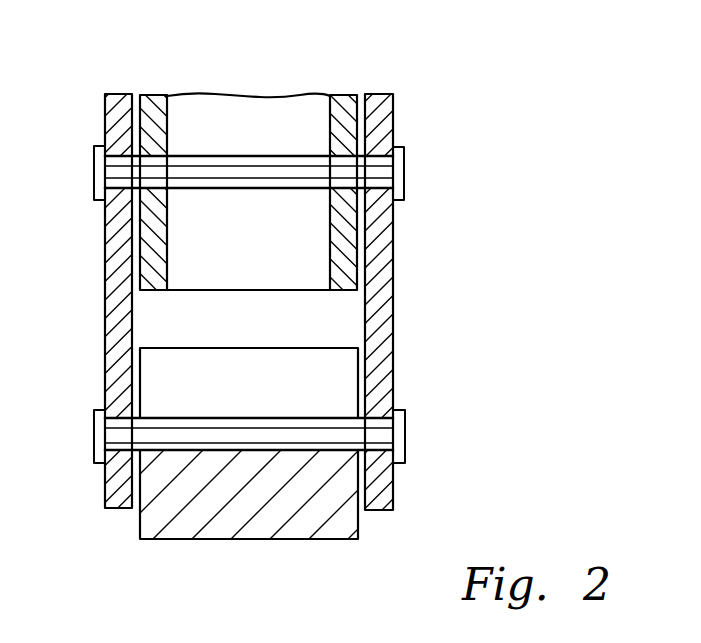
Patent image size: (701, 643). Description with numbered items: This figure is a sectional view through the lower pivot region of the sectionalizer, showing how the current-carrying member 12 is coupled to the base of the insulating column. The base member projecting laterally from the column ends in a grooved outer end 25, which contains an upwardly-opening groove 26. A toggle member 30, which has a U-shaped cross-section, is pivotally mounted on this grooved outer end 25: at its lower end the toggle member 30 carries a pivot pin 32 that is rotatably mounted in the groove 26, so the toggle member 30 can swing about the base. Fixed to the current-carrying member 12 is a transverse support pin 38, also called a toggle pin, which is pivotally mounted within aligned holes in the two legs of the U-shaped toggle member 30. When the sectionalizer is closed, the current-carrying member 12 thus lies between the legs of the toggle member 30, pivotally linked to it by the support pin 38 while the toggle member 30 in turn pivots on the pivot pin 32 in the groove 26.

The current-carrying member 12 is at (333, 115).
The grooved outer end 25 is at (188, 528).
The groove 26 is at (195, 365).
The toggle member 30 is at (105, 298).
The pivot pin 32 is at (318, 437).
The transverse support pin 38 is at (234, 168).